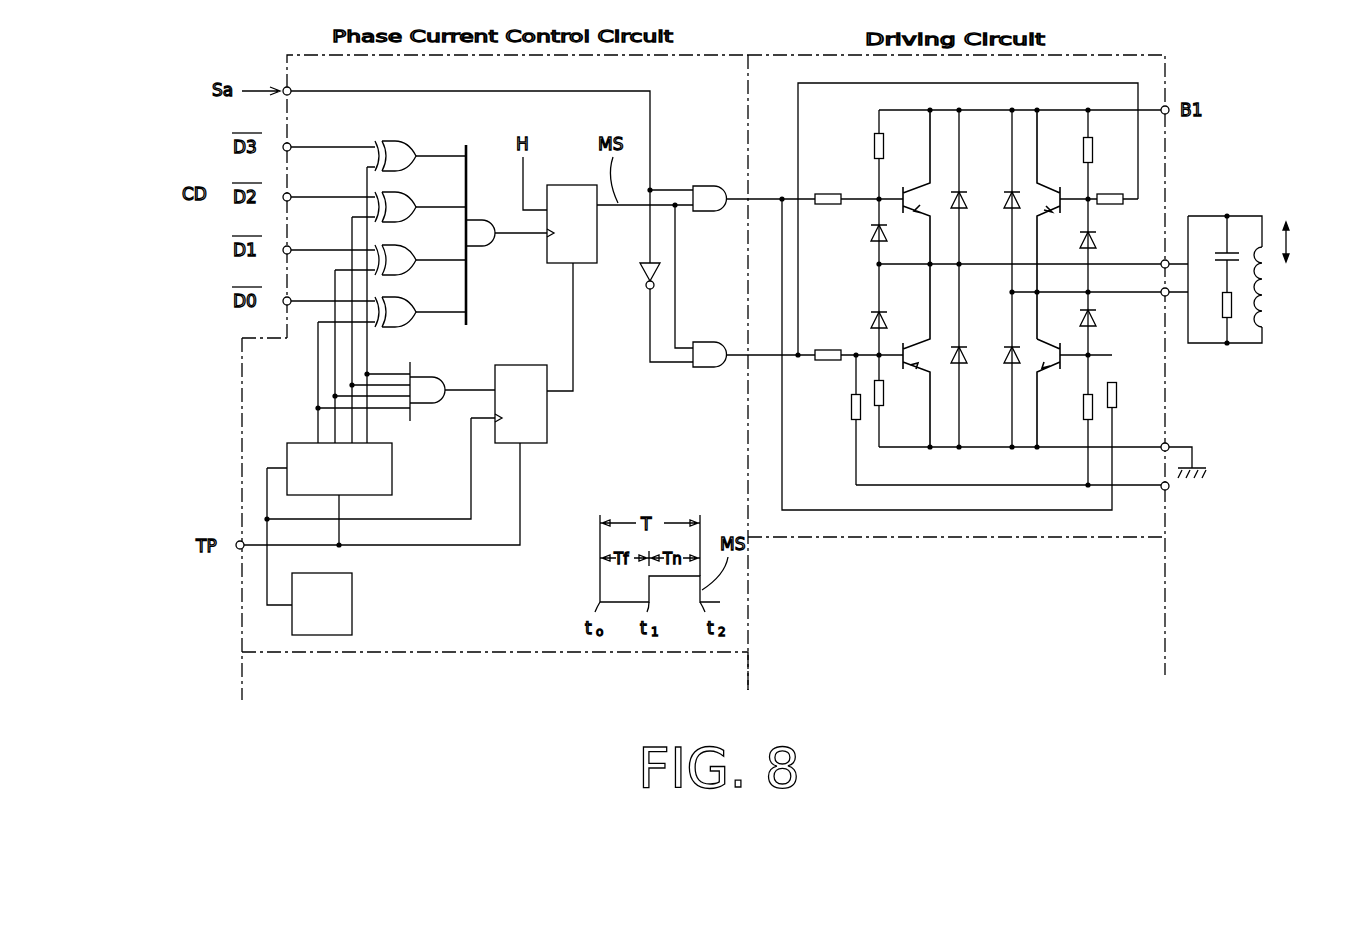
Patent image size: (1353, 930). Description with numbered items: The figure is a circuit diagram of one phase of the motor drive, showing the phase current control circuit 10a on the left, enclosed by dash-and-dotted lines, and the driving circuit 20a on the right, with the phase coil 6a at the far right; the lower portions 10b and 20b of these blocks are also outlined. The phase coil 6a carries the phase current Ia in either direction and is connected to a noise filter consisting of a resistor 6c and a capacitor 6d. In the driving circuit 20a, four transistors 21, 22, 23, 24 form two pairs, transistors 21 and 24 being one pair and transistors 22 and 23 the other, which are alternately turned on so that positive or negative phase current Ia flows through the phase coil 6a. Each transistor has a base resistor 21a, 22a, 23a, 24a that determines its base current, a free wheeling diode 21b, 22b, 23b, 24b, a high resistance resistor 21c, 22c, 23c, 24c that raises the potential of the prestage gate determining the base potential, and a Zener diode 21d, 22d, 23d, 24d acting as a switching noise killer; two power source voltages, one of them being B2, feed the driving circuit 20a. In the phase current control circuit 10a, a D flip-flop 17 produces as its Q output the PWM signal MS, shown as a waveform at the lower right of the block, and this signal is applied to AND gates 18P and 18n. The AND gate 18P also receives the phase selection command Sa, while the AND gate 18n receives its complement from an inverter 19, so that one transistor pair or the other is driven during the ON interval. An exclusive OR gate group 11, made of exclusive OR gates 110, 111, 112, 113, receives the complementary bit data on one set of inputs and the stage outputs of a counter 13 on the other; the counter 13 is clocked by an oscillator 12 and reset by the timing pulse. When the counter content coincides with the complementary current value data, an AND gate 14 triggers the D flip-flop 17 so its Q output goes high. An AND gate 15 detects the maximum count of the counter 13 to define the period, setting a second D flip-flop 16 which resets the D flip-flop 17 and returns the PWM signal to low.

The phase current control circuit 10a is at (242, 375).
The phase current control circuit lower portion 10b is at (242, 690).
The exclusive OR gate group 11 is at (392, 212).
The exclusive OR gate 110 is at (408, 300).
The exclusive OR gate 111 is at (408, 248).
The exclusive OR gate 112 is at (408, 196).
The exclusive OR gate 113 is at (410, 141).
The oscillator 12 is at (352, 604).
The counter 13 is at (392, 468).
The AND gate 14 is at (480, 246).
The AND gate 15 is at (433, 377).
The D flip-flop 16 is at (547, 438).
The D flip-flop 17 is at (566, 185).
The AND gate 18P is at (700, 186).
The AND gate 18n is at (704, 368).
The inverter 19 is at (641, 270).
The driving circuit 20a is at (1168, 72).
The driving circuit lower portion 20b is at (1167, 598).
The transistor 21 is at (912, 185).
The base resistor 21a is at (828, 193).
The free wheeling diode 21b is at (963, 190).
The high resistance resistor 21c is at (875, 138).
The Zener diode 21d is at (870, 235).
The transistor 22 is at (912, 340).
The base resistor 22a is at (828, 349).
The free wheeling diode 22b is at (960, 367).
The high resistance resistor 22c is at (850, 410).
The Zener diode 22d is at (870, 316).
The transistor 23 is at (1050, 186).
The base resistor 23a is at (1106, 205).
The free wheeling diode 23b is at (1010, 210).
The high resistance resistor 23c is at (1094, 152).
The Zener diode 23d is at (1095, 240).
The transistor 24 is at (1052, 372).
The base resistor 24a is at (1114, 382).
The free wheeling diode 24b is at (1008, 347).
The high resistance resistor 24c is at (1093, 415).
The Zener diode 24d is at (1095, 318).
The phase coil 6a is at (1270, 266).
The resistor 6c is at (1224, 330).
The capacitor 6d is at (1222, 250).
The phase current Ia is at (1282, 238).
The power source voltage B2 is at (1170, 490).